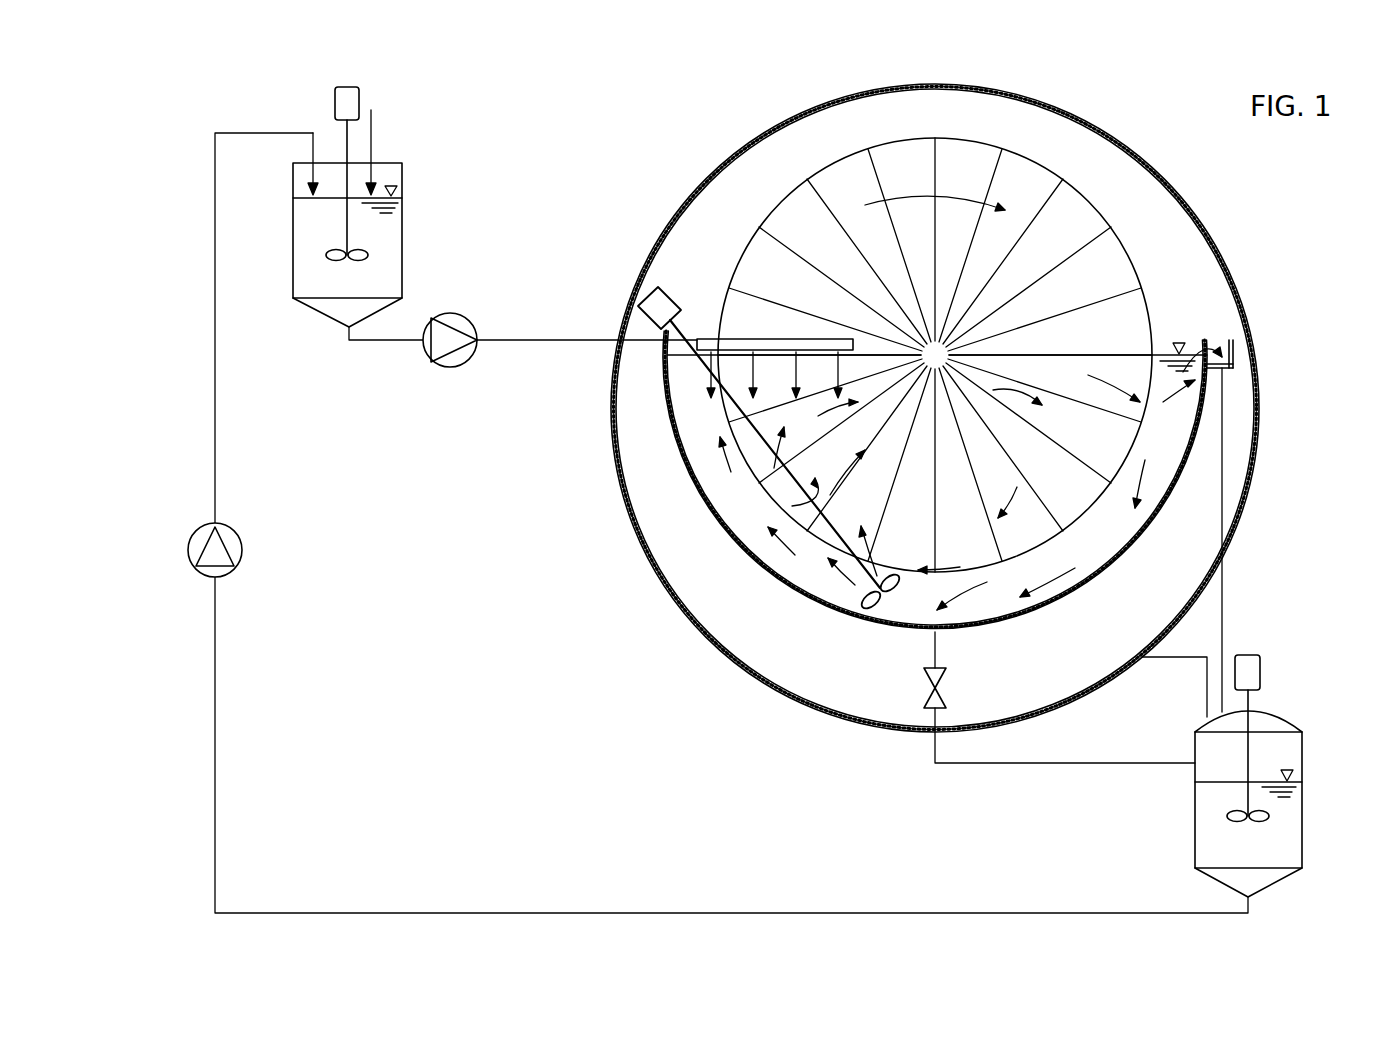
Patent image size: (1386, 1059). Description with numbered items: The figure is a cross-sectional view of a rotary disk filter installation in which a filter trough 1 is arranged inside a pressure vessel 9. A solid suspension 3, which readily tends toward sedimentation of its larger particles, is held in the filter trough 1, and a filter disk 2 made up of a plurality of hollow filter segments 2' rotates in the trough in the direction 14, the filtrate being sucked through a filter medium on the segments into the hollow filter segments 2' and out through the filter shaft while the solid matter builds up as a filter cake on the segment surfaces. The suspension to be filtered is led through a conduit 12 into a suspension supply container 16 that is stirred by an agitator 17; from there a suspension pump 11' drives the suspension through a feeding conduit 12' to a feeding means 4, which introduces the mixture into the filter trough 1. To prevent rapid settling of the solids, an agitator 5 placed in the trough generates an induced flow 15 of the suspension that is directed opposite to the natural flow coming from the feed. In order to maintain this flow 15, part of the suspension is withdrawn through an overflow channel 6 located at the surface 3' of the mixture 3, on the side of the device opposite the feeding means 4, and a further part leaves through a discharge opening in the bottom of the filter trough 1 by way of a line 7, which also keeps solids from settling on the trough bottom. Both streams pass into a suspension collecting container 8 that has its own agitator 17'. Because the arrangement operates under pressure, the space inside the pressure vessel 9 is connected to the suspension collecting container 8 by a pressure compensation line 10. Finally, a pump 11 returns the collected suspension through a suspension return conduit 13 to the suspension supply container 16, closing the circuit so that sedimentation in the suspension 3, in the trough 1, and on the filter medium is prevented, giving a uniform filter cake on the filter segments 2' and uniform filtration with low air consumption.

The filter trough 1 is at (703, 505).
The filter disk 2 is at (942, 329).
The filter segments 2' is at (898, 350).
The solid suspension 3 is at (935, 530).
The surface of mixture 3' is at (1180, 321).
The feeding means 4 is at (757, 338).
The agitator 5 is at (737, 425).
The overflow channel 6 is at (1228, 342).
The line 7 is at (934, 650).
The suspension collecting container 8 is at (1300, 760).
The pressure vessel 9 is at (1165, 178).
The pressure compensation line 10 is at (1208, 688).
The pump 11 is at (248, 539).
The suspension pump 11' is at (462, 308).
The conduit 12 is at (401, 137).
The feeding conduit 12' is at (523, 294).
The suspension return conduit 13 is at (408, 912).
The direction of rotation 14 is at (908, 188).
The induced flow 15 is at (812, 570).
The suspension supply container 16 is at (404, 214).
The agitator 17 is at (298, 167).
The agitator 17' is at (1287, 732).